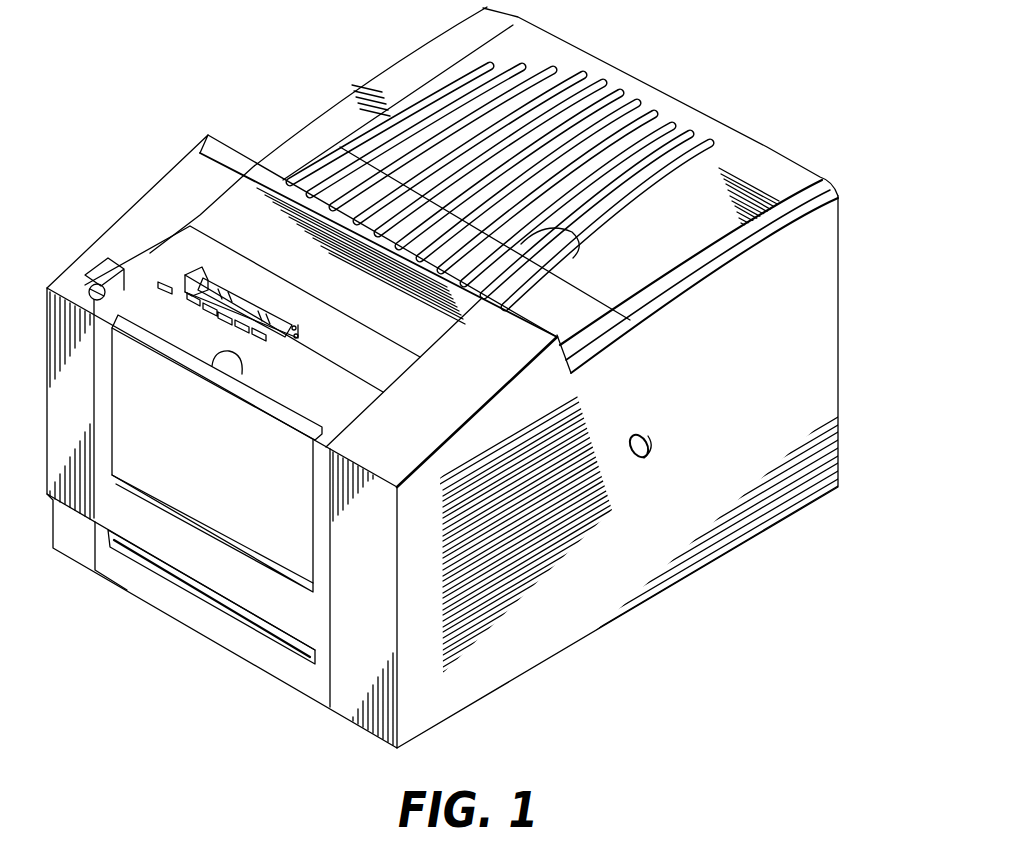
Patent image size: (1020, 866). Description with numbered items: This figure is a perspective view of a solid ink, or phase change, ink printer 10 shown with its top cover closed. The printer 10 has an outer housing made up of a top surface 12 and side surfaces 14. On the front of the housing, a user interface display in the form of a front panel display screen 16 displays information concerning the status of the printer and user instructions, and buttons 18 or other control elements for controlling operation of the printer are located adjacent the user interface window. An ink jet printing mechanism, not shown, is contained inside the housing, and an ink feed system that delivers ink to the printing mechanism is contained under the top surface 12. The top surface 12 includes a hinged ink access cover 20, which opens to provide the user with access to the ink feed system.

The ink printer 10 is at (763, 51).
The top surface 12 is at (780, 170).
The side surfaces 14 is at (827, 285).
The front panel display screen 16 is at (202, 278).
The buttons 18 is at (173, 287).
The hinged ink access cover 20 is at (476, 103).